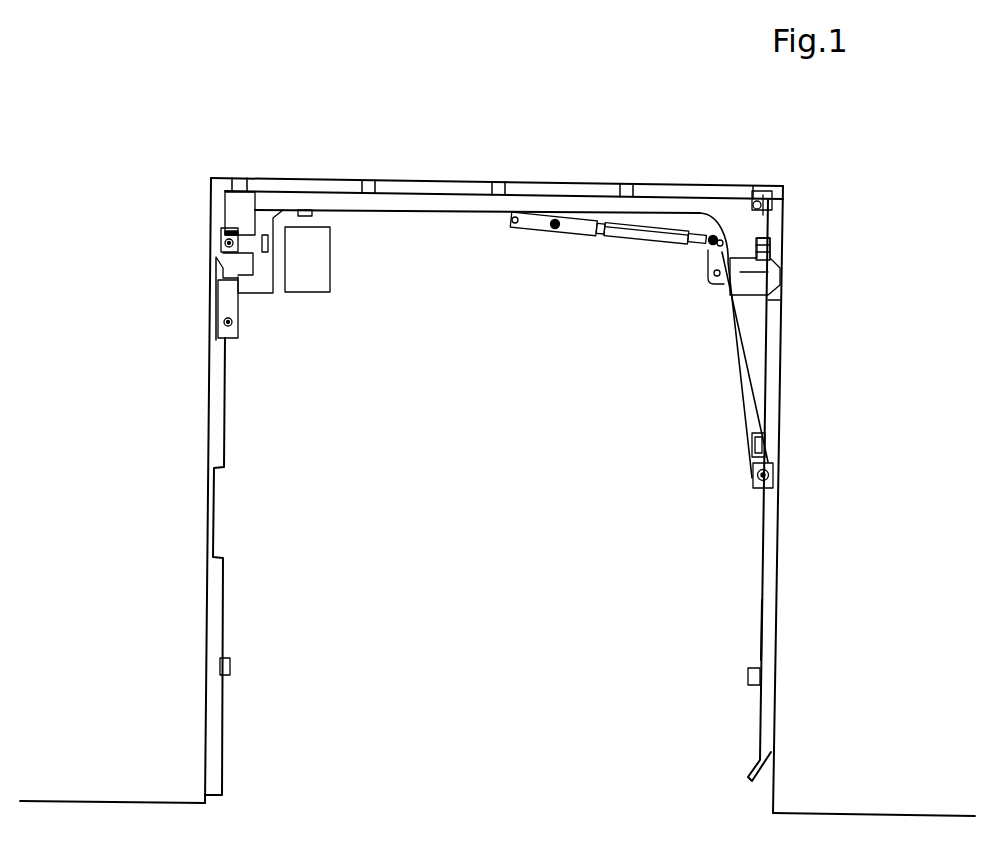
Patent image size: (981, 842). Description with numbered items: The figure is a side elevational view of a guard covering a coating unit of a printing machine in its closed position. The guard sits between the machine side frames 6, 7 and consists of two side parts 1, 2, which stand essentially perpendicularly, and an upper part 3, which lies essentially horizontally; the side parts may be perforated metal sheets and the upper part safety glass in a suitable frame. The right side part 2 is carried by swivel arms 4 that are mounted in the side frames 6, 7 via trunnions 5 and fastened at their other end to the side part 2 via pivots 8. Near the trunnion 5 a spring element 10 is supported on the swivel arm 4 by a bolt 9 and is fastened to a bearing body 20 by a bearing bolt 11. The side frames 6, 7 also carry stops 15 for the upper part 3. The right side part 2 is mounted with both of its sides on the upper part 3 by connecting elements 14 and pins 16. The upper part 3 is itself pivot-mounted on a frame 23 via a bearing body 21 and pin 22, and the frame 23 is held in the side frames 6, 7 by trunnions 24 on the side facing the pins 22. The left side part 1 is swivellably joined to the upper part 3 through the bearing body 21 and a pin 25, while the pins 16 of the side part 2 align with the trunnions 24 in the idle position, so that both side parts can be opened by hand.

The side part 1 is at (210, 435).
The side part 2 is at (771, 549).
The upper part 3 is at (666, 188).
The swivel arm 4 is at (741, 374).
The trunnion 5 is at (513, 226).
The side frame 6 is at (769, 630).
The side frame 7 is at (697, 627).
The pivot 8 is at (770, 474).
The bolt 9 is at (556, 228).
The spring element 10 is at (651, 243).
The bearing bolt 11 is at (710, 252).
The connecting element 14 is at (760, 292).
The stop 15 is at (308, 212).
The pin 16 is at (820, 250).
The trunnion 24 is at (770, 248).
The bearing body 20 is at (800, 209).
The bearing body 21 is at (262, 285).
The pin 22 is at (226, 243).
The frame 23 is at (457, 198).
The pin 25 is at (231, 333).